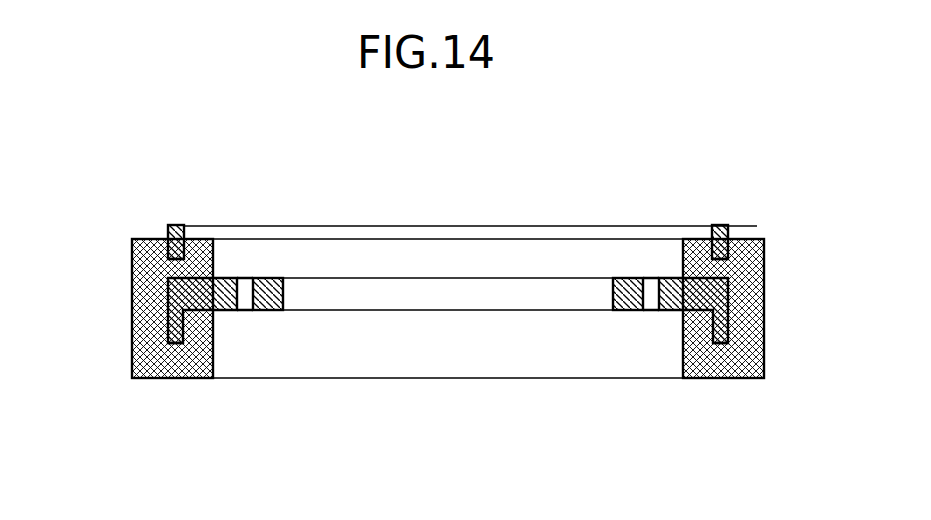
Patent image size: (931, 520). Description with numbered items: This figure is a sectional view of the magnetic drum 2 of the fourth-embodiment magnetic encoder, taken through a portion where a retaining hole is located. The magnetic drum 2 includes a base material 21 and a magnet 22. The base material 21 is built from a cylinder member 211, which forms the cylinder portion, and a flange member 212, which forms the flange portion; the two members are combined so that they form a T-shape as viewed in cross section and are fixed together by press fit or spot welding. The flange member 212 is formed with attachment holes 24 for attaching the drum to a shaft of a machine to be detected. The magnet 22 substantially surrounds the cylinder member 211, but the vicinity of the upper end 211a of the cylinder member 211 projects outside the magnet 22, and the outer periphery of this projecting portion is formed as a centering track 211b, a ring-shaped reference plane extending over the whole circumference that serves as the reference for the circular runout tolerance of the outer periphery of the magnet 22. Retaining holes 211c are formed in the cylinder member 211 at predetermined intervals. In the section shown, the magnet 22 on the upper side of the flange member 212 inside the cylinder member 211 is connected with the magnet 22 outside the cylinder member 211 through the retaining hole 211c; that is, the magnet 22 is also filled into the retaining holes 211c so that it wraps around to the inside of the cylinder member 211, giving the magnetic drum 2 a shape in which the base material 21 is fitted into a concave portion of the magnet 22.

The magnetic drum 2 is at (428, 178).
The base material 21 is at (280, 208).
The magnet 22 is at (140, 340).
The attachment holes 24 is at (243, 292).
The cylinder member 211 is at (182, 340).
The upper end 211a is at (185, 230).
The centering track 211b is at (167, 228).
The retaining holes 211c is at (170, 262).
The flange member 212 is at (266, 300).